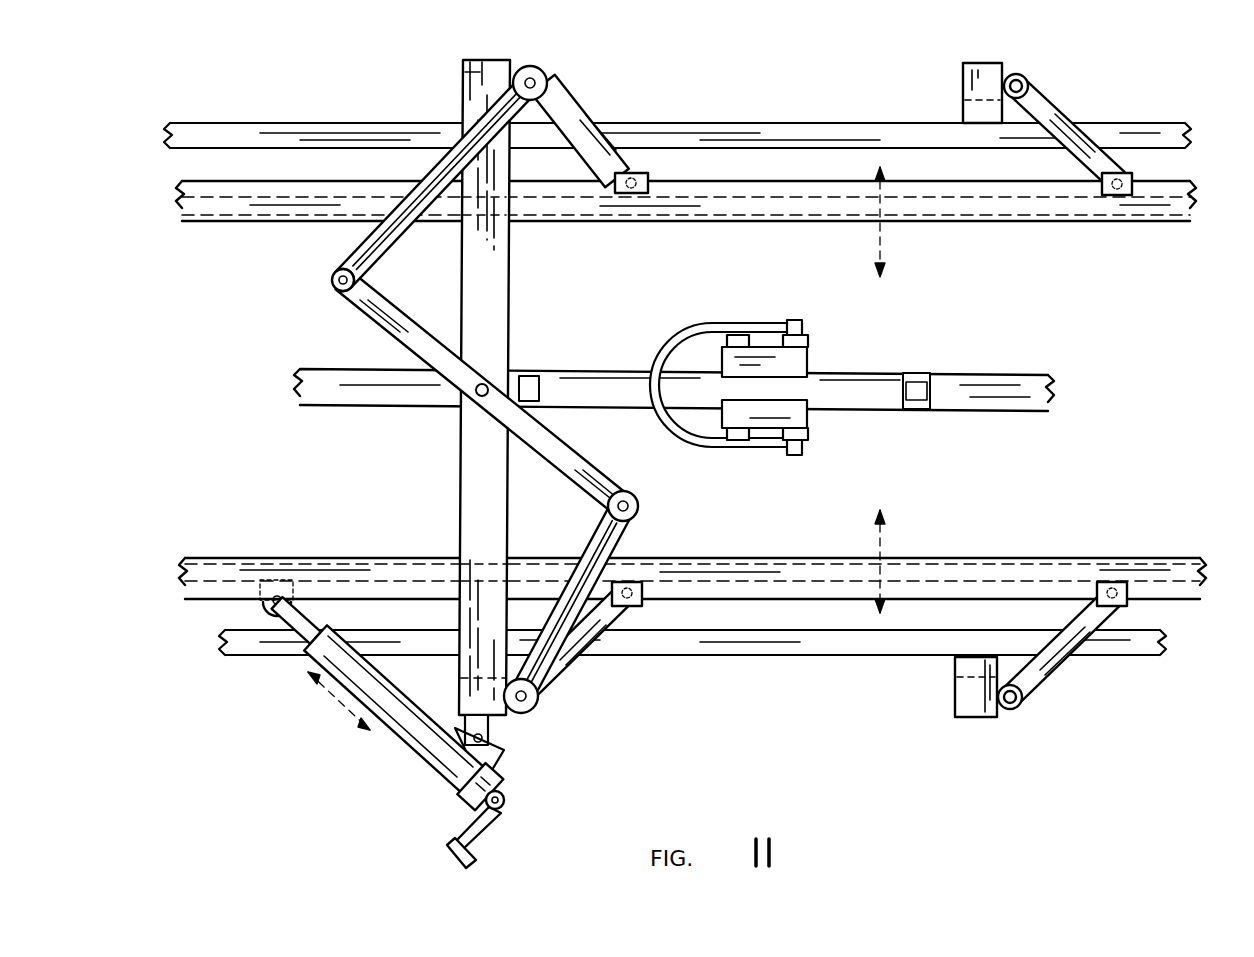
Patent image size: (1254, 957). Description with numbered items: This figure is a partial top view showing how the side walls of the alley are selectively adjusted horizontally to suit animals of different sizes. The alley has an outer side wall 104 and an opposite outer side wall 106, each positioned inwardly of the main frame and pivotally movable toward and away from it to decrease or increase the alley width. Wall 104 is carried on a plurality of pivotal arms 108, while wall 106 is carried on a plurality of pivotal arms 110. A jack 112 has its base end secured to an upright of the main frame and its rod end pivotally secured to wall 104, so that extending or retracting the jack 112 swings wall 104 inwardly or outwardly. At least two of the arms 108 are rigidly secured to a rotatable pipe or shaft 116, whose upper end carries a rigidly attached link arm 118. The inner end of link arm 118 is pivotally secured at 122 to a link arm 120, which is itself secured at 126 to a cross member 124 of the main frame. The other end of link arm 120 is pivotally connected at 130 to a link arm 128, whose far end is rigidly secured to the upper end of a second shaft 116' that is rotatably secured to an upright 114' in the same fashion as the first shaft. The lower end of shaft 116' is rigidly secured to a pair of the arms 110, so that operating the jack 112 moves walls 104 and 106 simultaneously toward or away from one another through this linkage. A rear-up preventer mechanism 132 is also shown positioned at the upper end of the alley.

The outer side wall 104 is at (1000, 560).
The outer side wall 106 is at (968, 207).
The pivotal arms 108 is at (577, 659).
The pivotal arms 110 is at (570, 112).
The jack 112 is at (440, 750).
The upright 114' is at (411, 81).
The shaft 116 is at (583, 725).
The shaft 116' is at (596, 77).
The link arm 118 is at (622, 532).
The link arm 120 is at (567, 460).
The pivot connection 122 is at (638, 506).
The cross member 124 is at (487, 313).
The pivot connection 126 is at (474, 402).
The link arm 128 is at (357, 240).
The pivot connection 130 is at (335, 278).
The rear-up preventer mechanism 132 is at (815, 315).